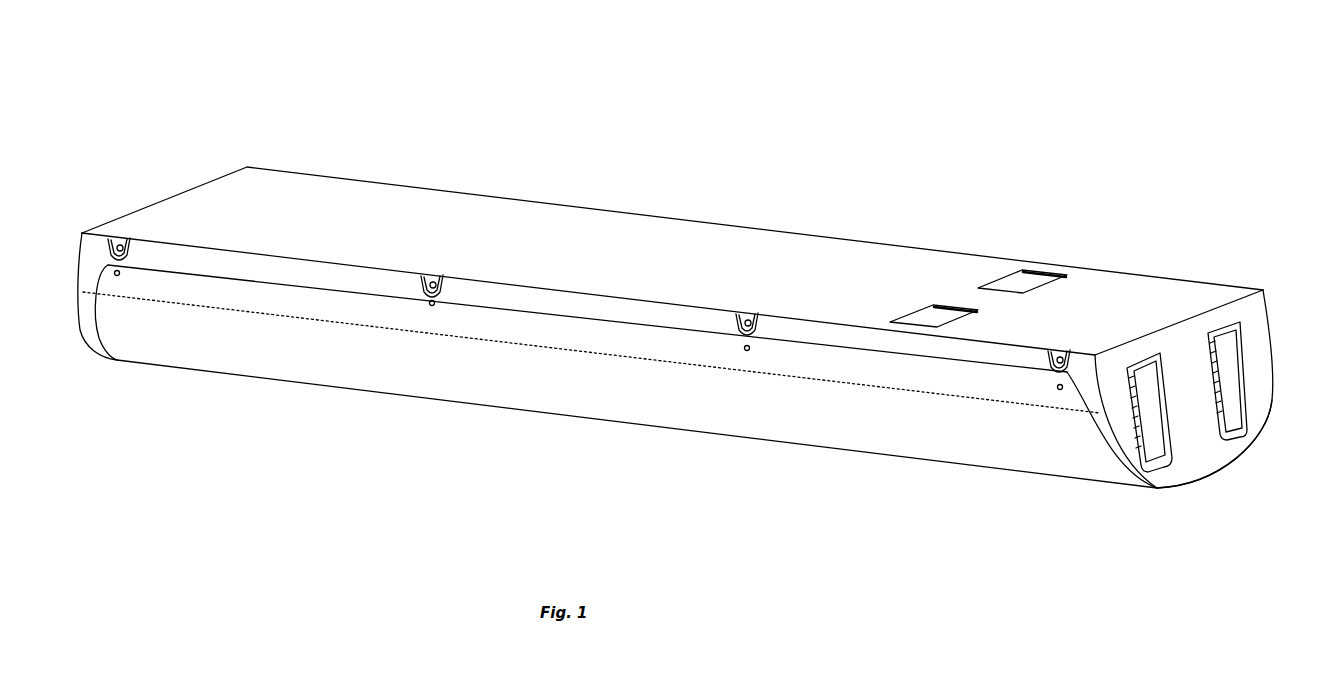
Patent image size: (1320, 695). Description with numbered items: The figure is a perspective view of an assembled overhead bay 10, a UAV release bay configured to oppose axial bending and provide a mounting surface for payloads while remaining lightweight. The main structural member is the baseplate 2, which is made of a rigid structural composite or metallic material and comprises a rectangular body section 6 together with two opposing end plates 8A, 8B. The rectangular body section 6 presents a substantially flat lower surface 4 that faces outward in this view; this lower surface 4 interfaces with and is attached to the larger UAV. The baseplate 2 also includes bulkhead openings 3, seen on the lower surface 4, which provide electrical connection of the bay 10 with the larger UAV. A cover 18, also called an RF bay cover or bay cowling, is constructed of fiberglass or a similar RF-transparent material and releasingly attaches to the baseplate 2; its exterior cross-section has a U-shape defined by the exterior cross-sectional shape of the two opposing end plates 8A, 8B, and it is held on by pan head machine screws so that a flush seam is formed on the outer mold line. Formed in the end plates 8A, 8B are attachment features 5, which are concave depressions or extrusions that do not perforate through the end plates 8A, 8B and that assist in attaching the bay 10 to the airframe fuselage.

The bay 10 is at (882, 122).
The rectangular body section 6 is at (488, 238).
The lower surface 4 is at (624, 262).
The bulkhead openings 3 is at (1024, 279).
The baseplate 2 is at (1143, 317).
The attachment features 5 is at (1230, 368).
The end plate 8A is at (1190, 437).
The end plate 8B is at (90, 332).
The cover 18 is at (583, 388).